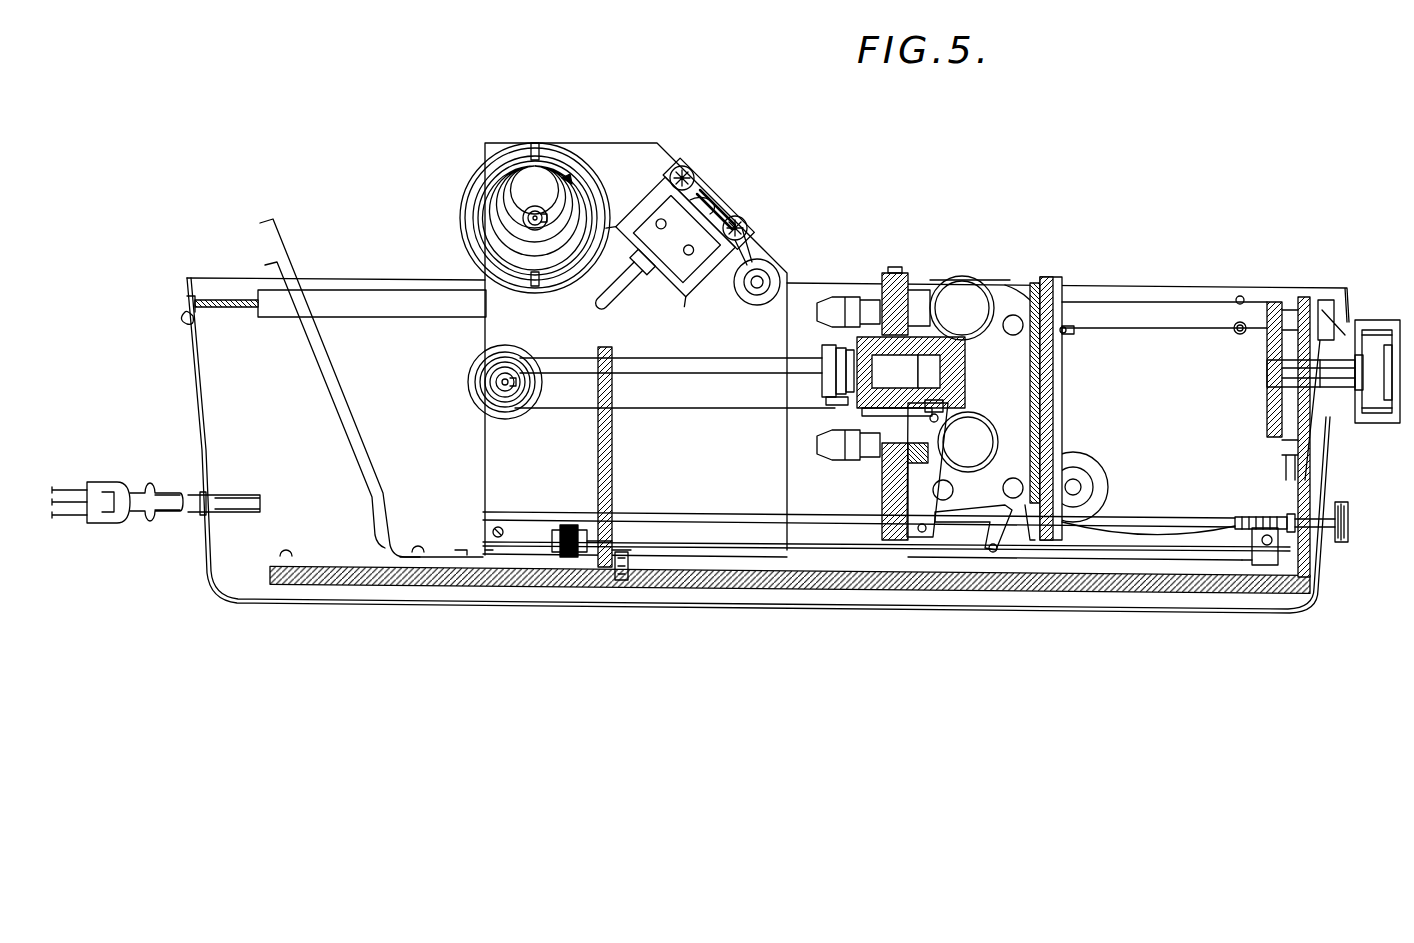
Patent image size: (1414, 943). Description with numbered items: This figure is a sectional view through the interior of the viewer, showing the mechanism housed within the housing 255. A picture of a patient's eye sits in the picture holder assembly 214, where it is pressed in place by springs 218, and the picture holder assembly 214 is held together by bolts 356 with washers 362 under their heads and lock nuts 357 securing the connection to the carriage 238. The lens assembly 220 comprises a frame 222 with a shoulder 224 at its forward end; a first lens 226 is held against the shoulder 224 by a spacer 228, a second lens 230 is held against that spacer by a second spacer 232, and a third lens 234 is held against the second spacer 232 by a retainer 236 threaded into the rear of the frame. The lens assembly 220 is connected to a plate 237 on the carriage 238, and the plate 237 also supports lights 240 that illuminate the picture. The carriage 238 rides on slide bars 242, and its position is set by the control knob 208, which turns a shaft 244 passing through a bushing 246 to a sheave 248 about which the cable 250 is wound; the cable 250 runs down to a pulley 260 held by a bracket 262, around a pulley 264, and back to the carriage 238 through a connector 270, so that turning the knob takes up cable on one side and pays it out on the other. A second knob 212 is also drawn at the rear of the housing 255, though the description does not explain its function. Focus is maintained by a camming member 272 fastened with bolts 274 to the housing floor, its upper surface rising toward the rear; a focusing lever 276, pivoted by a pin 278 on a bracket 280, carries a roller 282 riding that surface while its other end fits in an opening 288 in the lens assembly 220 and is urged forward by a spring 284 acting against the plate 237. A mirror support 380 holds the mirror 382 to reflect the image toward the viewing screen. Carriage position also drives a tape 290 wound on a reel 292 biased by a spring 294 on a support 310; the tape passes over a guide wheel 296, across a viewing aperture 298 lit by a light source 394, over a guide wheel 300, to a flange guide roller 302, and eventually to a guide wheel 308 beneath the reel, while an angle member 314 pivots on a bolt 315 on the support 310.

The control knob 208 is at (1382, 428).
The adjusting knob 212 is at (1350, 522).
The picture holder assembly 214 is at (1077, 520).
The springs 218 is at (968, 442).
The lens assembly 220 is at (812, 414).
The frame 222 is at (852, 406).
The shoulder 224 is at (895, 371).
The first lens 226 is at (939, 371).
The spacer 228 is at (911, 371).
The second lens 230 is at (951, 308).
The second spacer 232 is at (838, 386).
The third lens 234 is at (822, 357).
The retainer 236 is at (836, 398).
The plate 237 is at (884, 297).
The carriage 238 is at (1060, 420).
The lights 240 is at (982, 290).
The slide bars 242 is at (770, 516).
The shaft 244 is at (1290, 370).
The bushing 246 is at (1334, 318).
The sheave 248 is at (1274, 345).
The cable 250 is at (1170, 530).
The housing 255 is at (1315, 596).
The pulley 260 is at (1238, 520).
The bracket 262 is at (1265, 560).
The pulley 264 is at (556, 530).
The connector 270 is at (872, 548).
The camming member 272 is at (682, 567).
The bolts 274 is at (628, 552).
The focusing lever 276 is at (992, 510).
The pin 278 is at (918, 533).
The bracket 280 is at (938, 523).
The roller 282 is at (998, 552).
The spring 284 is at (892, 456).
The opening 288 is at (950, 392).
The tape 290 is at (585, 160).
The reel 292 is at (488, 168).
The spring 294 is at (505, 200).
The guide wheel 296 is at (689, 170).
The viewing aperture 298 is at (720, 206).
The guide wheel 300 is at (750, 229).
The flange guide roller 302 is at (748, 301).
The guide wheel 308 is at (528, 408).
The support 310 is at (503, 331).
The angle member 314 is at (528, 515).
The bolt 315 is at (493, 532).
The bolts 356 is at (1032, 335).
The lock nuts 357 is at (1070, 334).
The washers 362 is at (1010, 280).
The mirror support 380 is at (335, 413).
The mirror 382 is at (350, 420).
The light source 394 is at (735, 207).